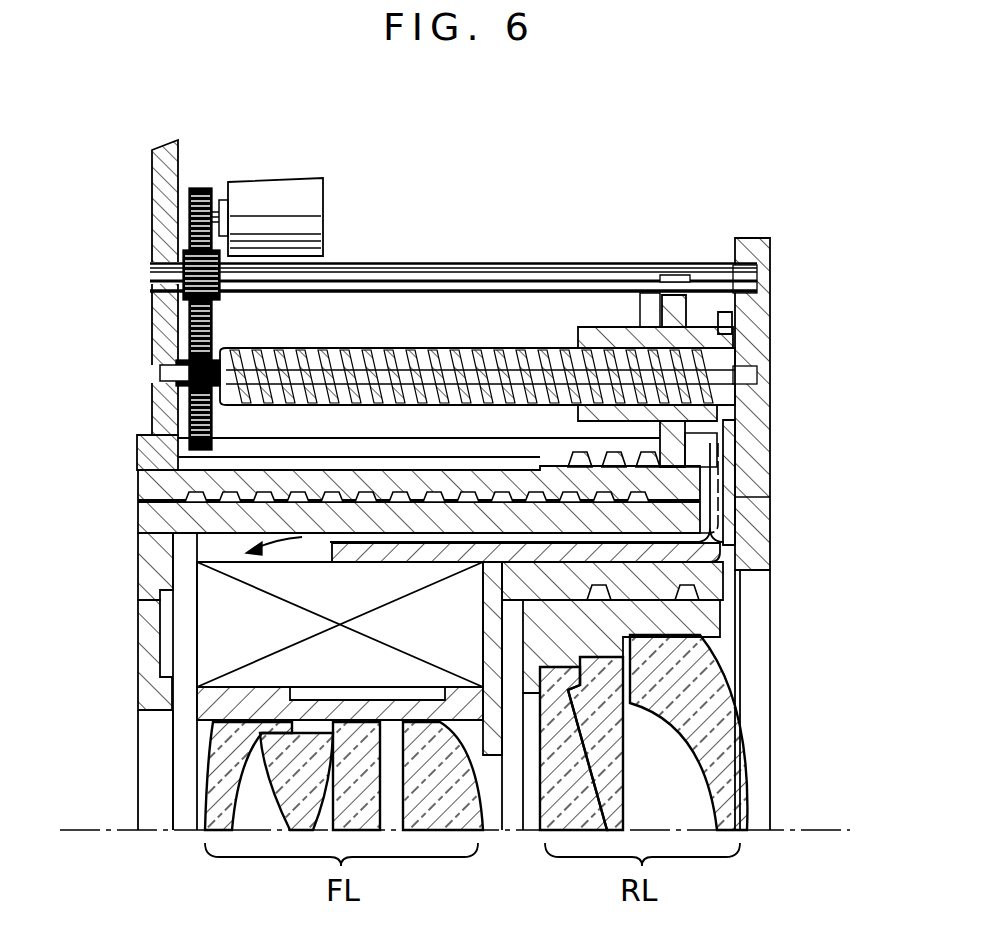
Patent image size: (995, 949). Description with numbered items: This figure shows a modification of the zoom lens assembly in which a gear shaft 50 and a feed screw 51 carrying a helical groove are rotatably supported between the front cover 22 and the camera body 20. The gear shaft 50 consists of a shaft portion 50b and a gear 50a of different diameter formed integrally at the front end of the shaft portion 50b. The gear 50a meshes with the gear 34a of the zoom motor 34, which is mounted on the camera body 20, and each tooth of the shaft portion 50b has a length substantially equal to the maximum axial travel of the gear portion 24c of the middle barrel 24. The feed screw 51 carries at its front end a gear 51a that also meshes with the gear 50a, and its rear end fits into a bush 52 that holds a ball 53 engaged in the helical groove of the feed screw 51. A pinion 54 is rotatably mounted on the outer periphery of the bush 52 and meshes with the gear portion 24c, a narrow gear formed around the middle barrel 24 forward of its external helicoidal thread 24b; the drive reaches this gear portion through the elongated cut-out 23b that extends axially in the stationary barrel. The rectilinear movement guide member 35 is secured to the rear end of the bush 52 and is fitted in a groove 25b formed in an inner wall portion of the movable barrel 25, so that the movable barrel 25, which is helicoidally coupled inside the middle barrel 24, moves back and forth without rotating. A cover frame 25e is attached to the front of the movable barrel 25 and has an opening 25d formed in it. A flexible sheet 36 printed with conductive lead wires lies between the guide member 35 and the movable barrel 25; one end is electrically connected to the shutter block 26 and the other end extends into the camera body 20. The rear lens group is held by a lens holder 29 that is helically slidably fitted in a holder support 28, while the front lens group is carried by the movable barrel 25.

The camera body 20 is at (792, 300).
The front cover 22 is at (152, 183).
The elongated cut-out 23b is at (183, 453).
The middle barrel 24 is at (138, 495).
The external helicoidal thread 24b is at (563, 456).
The gear portion 24c is at (700, 455).
The movable barrel 25 is at (433, 524).
The groove 25b is at (316, 562).
The opening 25d is at (153, 694).
The cover frame 25e is at (152, 553).
The shutter block 26 is at (205, 620).
The holder support 28 is at (716, 583).
The lens holder 29 is at (717, 628).
The zoom motor 34 is at (278, 178).
The gear 34a is at (202, 188).
The rectilinear movement guide member 35 is at (735, 520).
The flexible sheet 36 is at (276, 560).
The gear shaft 50 is at (455, 258).
The gear 50a is at (220, 297).
The shaft portion 50b is at (390, 262).
The feed screw 51 is at (490, 350).
The gear 51a is at (214, 431).
The bush 52 is at (578, 336).
The ball 53 is at (643, 327).
The pinion 54 is at (675, 262).